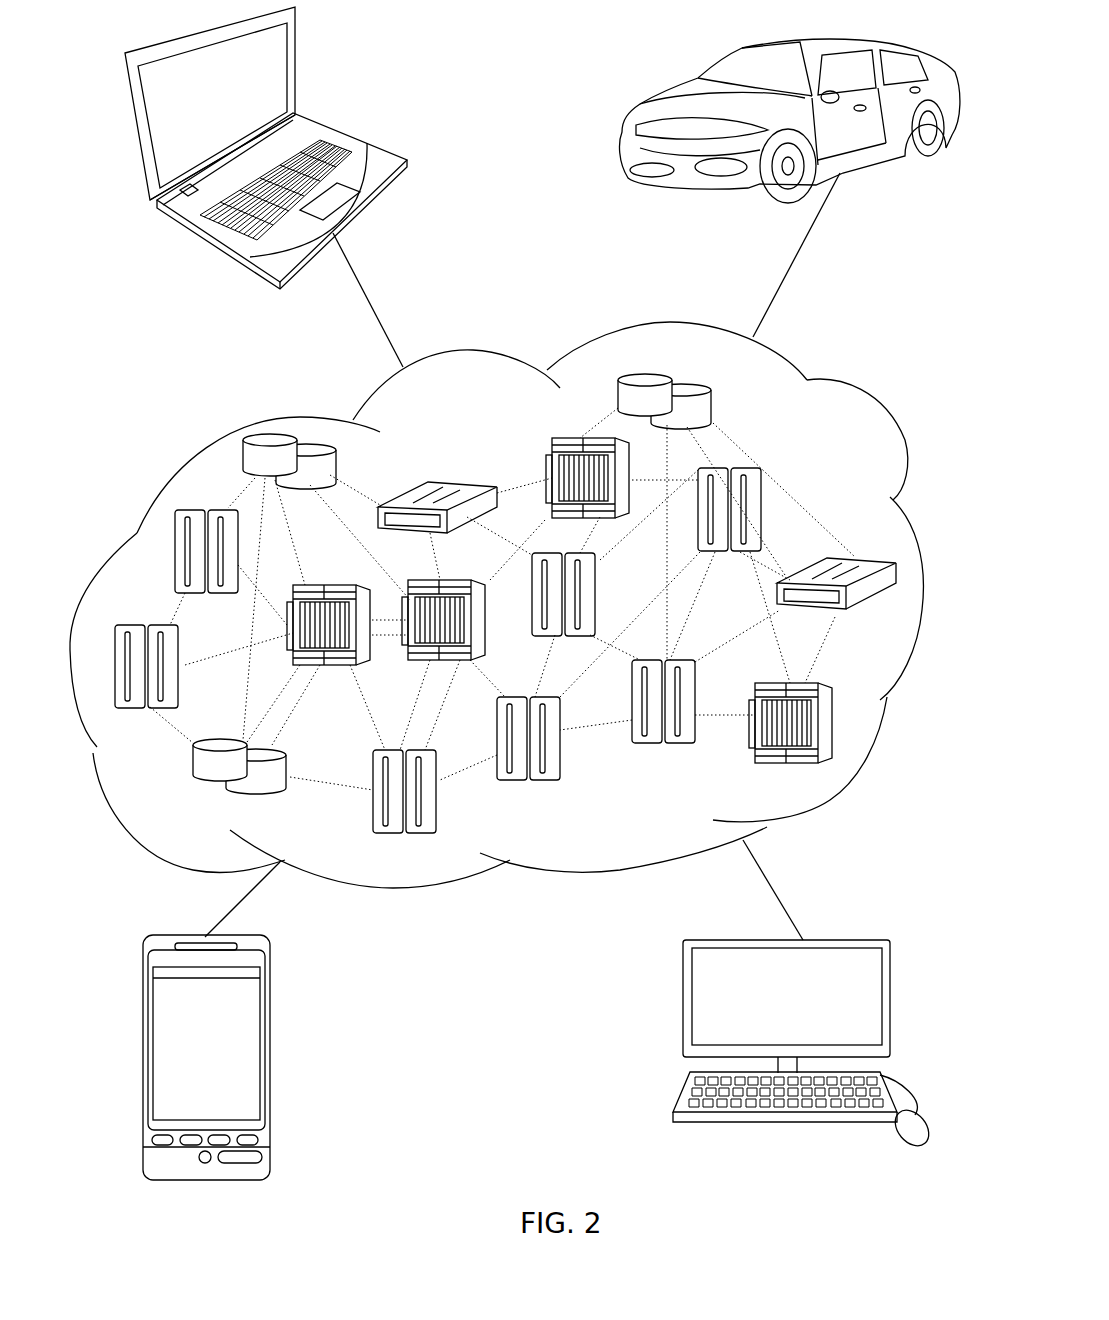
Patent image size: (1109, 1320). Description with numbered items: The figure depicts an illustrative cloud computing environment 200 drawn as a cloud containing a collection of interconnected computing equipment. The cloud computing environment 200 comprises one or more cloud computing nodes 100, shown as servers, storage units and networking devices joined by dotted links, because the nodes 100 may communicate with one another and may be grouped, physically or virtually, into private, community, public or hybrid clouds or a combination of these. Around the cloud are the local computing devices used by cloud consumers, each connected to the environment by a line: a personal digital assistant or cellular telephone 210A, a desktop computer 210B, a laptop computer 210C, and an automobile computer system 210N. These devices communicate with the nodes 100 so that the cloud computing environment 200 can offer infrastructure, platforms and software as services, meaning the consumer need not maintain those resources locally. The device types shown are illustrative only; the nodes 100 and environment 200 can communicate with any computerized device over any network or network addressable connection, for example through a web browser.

The cloud computing node 100 is at (864, 535).
The cloud computing environment 200 is at (873, 395).
The cellular telephone 210A is at (310, 938).
The desktop computer 210B is at (890, 962).
The laptop computer 210C is at (353, 143).
The automobile computer system 210N is at (953, 27).